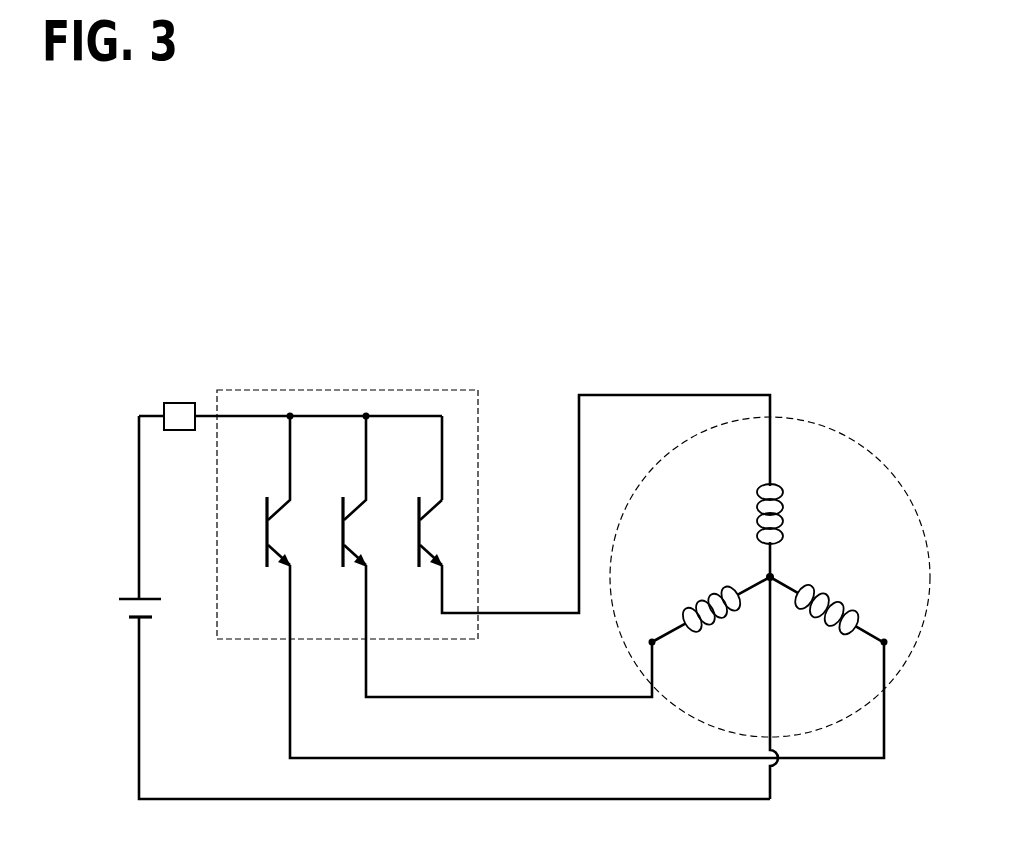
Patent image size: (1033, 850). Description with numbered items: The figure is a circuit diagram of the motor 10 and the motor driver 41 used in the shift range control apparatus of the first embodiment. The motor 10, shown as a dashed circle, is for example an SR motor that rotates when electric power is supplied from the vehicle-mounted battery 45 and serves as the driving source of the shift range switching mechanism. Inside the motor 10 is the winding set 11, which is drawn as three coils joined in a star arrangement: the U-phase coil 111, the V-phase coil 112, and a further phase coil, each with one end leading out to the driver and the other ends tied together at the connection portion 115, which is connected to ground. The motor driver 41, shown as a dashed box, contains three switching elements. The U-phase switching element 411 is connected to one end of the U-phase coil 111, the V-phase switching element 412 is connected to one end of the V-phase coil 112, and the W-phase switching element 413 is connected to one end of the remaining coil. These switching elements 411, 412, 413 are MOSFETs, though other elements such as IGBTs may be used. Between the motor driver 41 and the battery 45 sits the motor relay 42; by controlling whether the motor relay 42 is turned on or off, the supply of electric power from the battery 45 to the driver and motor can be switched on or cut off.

The motor 10 is at (836, 430).
The winding set 11 is at (738, 535).
The U-phase coil 111 is at (785, 516).
The V-phase coil 112 is at (705, 598).
The connection portion 115 is at (774, 583).
The motor driver 41 is at (246, 390).
The U-phase switching element 411 is at (282, 503).
The V-phase switching element 412 is at (357, 503).
The W-phase switching element 413 is at (433, 503).
The motor relay 42 is at (180, 403).
The battery 45 is at (124, 598).